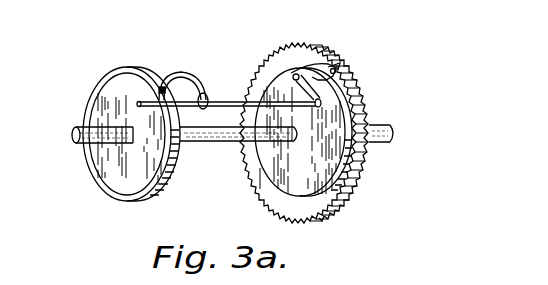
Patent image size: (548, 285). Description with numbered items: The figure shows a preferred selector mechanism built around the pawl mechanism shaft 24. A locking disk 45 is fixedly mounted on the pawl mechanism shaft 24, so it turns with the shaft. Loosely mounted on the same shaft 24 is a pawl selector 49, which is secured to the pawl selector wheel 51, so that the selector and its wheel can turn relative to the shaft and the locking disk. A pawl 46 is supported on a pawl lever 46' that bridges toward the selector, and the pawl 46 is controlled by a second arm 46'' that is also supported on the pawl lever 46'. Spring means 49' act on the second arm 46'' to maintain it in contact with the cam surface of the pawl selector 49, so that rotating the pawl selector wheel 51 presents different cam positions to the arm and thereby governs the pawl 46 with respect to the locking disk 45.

The pawl mechanism shaft 24 is at (72, 137).
The locking disk 45 is at (100, 78).
The pawl 46 is at (183, 73).
The pawl lever 46' is at (226, 84).
The second arm 46'' is at (305, 54).
The pawl selector 49 is at (272, 140).
The spring means 49' is at (364, 54).
The pawl selector wheel 51 is at (348, 197).